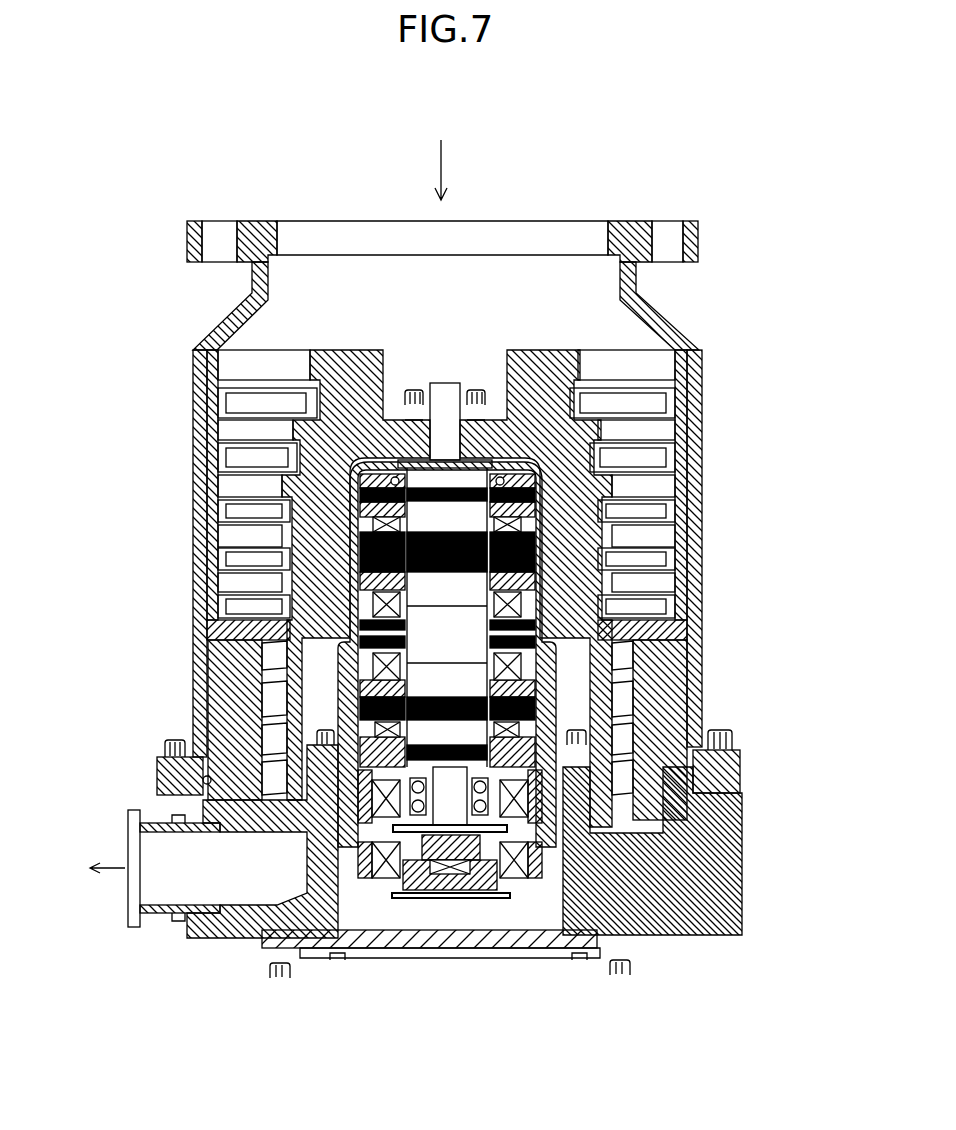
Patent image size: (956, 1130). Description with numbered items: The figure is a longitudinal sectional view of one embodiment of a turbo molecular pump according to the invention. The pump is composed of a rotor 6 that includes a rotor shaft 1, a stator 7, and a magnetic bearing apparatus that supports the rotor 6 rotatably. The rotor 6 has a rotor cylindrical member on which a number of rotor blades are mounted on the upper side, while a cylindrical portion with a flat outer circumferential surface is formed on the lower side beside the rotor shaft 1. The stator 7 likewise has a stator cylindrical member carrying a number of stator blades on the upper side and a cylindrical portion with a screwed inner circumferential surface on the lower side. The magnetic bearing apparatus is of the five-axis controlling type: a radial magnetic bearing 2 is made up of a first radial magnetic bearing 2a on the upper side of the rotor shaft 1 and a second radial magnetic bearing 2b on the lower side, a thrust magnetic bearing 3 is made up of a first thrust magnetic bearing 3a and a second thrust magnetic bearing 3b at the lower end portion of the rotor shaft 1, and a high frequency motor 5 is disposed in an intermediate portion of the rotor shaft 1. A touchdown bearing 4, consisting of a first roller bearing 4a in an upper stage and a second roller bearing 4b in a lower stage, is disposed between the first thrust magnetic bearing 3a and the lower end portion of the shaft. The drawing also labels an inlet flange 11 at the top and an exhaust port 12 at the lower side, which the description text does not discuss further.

The rotor shaft 1 is at (445, 518).
The radial magnetic bearing 2 is at (584, 627).
The first radial magnetic bearing 2a is at (553, 550).
The second radial magnetic bearing 2b is at (556, 650).
The thrust magnetic bearing 3 is at (610, 845).
The first thrust magnetic bearing 3a is at (555, 845).
The second thrust magnetic bearing 3b is at (558, 880).
The touchdown bearing 4 is at (588, 781).
The first roller bearing 4a is at (540, 772).
The second roller bearing 4b is at (560, 805).
The high frequency motor 5 is at (345, 580).
The rotor 6 is at (337, 365).
The stator 7 is at (206, 430).
The inlet flange 11 is at (545, 236).
The exhaust port 12 is at (178, 880).